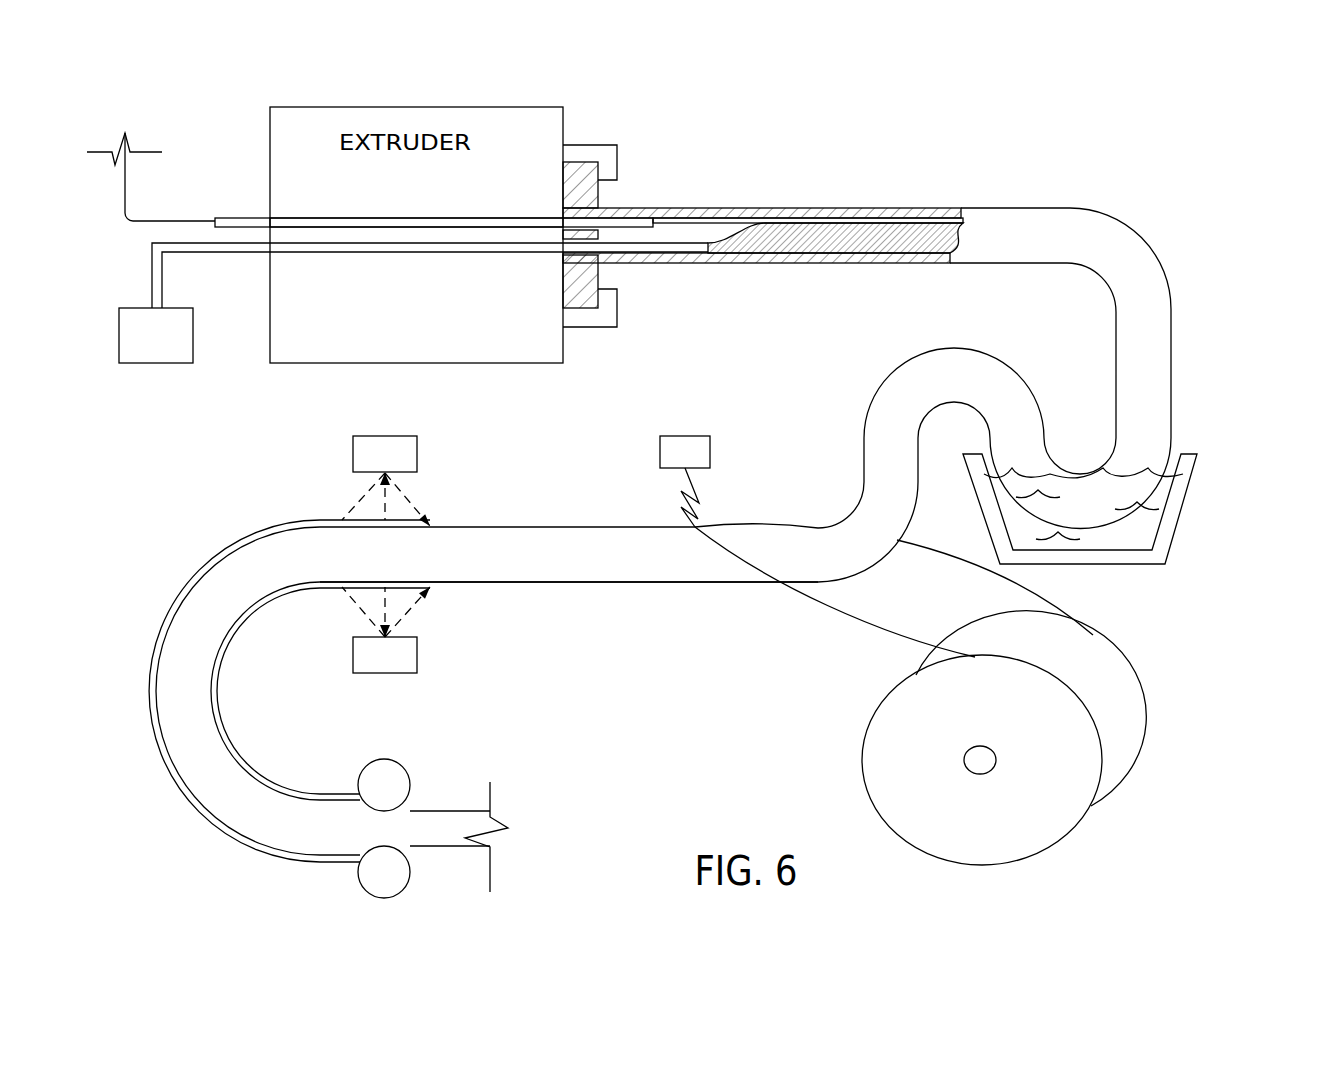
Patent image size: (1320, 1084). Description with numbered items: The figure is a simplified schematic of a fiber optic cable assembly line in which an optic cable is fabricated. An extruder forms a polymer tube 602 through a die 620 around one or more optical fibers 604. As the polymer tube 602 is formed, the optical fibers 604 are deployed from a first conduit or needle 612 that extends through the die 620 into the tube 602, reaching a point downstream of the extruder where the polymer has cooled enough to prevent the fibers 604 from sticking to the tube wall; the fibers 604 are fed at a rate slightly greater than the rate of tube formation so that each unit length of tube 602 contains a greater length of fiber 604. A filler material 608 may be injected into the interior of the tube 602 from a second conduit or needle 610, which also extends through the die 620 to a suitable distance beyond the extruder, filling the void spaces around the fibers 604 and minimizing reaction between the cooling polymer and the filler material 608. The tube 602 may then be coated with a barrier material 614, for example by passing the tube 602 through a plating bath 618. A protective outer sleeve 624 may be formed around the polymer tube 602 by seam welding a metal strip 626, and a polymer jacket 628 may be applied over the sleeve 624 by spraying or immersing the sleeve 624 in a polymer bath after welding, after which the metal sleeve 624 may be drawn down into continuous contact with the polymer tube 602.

The polymer tube 602 is at (800, 207).
The optical fibers 604 is at (125, 188).
The filler material 608 is at (828, 235).
The second conduit or needle 610 is at (478, 252).
The first conduit or needle 612 is at (505, 218).
The barrier material 614 is at (1137, 537).
The plating bath 618 is at (1205, 471).
The die 620 is at (598, 190).
The protective outer sleeve 624 is at (663, 565).
The metal strip 626 is at (1145, 720).
The polymer jacket 628 is at (250, 535).